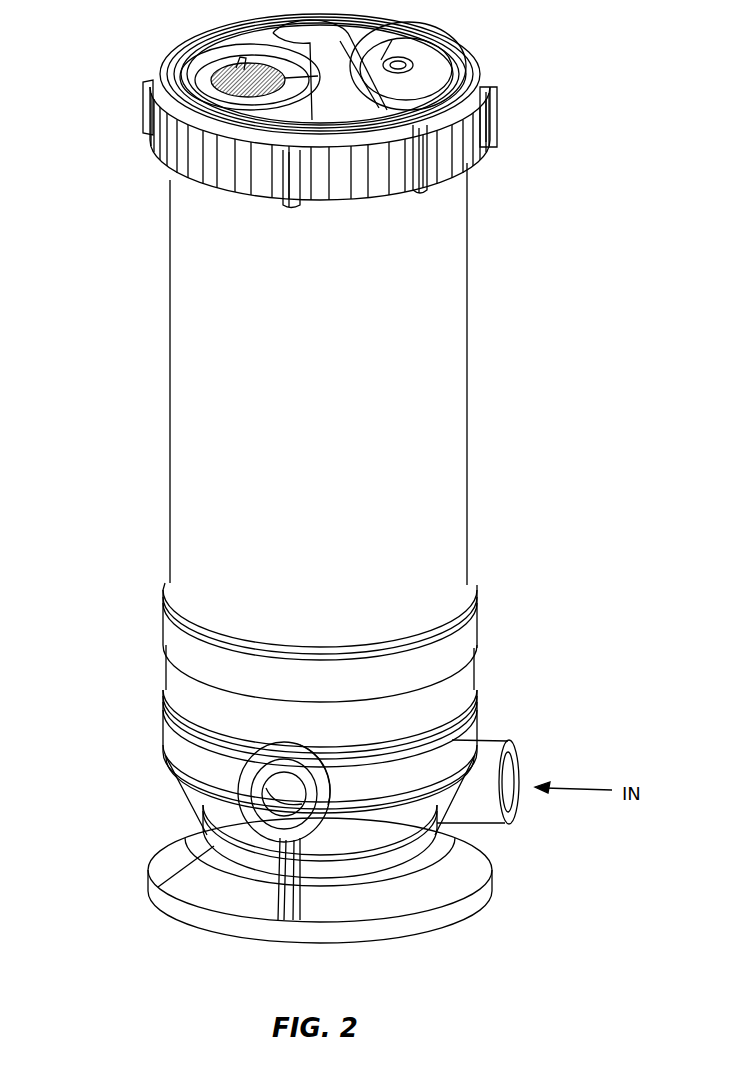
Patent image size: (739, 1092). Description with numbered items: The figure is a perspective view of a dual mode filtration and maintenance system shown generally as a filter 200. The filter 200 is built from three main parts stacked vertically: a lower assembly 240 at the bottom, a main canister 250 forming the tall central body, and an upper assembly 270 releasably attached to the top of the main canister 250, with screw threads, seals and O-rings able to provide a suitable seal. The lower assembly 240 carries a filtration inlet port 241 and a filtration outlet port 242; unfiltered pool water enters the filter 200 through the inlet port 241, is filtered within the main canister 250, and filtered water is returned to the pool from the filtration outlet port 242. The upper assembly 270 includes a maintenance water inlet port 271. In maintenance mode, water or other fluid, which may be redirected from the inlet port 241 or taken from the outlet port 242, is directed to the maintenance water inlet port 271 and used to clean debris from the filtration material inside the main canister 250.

The filter 200 is at (582, 241).
The lower assembly 240 is at (338, 763).
The filtration inlet port 241 is at (520, 768).
The filtration outlet port 242 is at (160, 886).
The main canister 250 is at (467, 368).
The upper assembly 270 is at (323, 111).
The maintenance water inlet port 271 is at (217, 75).